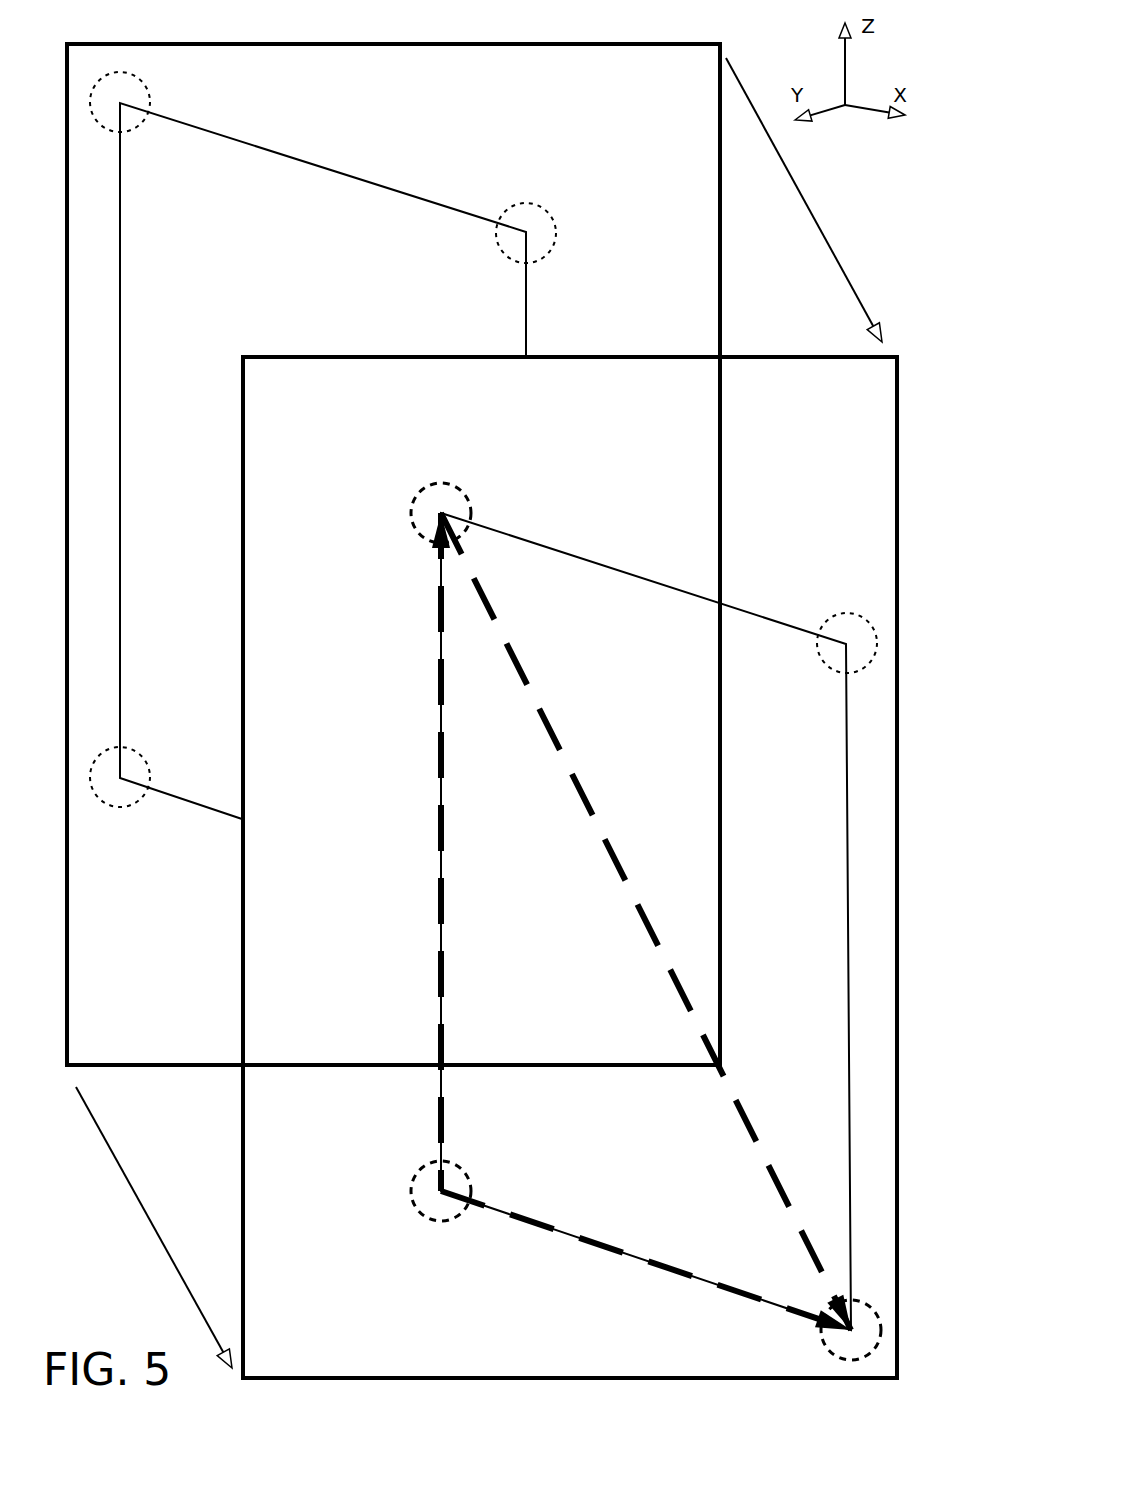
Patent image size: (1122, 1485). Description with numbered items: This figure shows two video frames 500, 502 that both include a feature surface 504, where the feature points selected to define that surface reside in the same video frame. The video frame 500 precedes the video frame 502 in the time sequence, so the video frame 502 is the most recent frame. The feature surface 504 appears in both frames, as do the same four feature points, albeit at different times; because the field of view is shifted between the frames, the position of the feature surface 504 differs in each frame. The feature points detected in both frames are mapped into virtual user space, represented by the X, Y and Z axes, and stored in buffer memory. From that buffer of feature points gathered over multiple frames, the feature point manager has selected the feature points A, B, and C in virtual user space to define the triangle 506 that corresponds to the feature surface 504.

The video frame 500 is at (393, 554).
The video frame 502 is at (570, 867).
The feature surface 504 is at (633, 909).
The triangle 506 is at (590, 800).